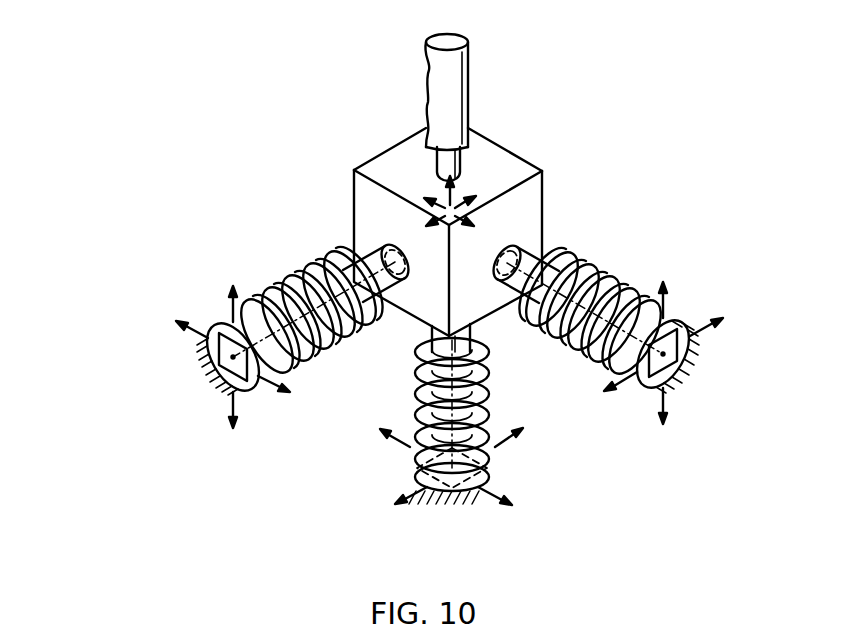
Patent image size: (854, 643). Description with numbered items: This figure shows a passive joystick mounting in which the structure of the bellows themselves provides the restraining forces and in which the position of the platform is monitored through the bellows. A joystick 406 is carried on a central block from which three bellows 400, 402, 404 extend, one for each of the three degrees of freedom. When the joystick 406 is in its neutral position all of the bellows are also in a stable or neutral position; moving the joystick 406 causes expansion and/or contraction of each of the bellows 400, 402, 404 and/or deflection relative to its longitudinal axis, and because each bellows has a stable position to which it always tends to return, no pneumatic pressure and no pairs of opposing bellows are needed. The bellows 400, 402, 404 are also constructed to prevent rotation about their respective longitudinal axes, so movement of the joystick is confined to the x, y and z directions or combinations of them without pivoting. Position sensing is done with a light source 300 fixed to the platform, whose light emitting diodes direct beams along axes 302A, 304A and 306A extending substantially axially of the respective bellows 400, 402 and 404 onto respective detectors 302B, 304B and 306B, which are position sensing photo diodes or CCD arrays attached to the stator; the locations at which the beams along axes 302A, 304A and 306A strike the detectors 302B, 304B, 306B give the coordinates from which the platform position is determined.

The light source 300 is at (534, 154).
The light beam axis 302A is at (452, 366).
The position sensor 302B is at (480, 469).
The light beam axis 304A is at (318, 284).
The position sensor 304B is at (212, 370).
The light beam axis 306A is at (592, 285).
The position sensor 306B is at (690, 374).
The bellows 400 is at (416, 392).
The bellows 402 is at (275, 298).
The bellows 404 is at (572, 262).
The joystick 406 is at (455, 80).